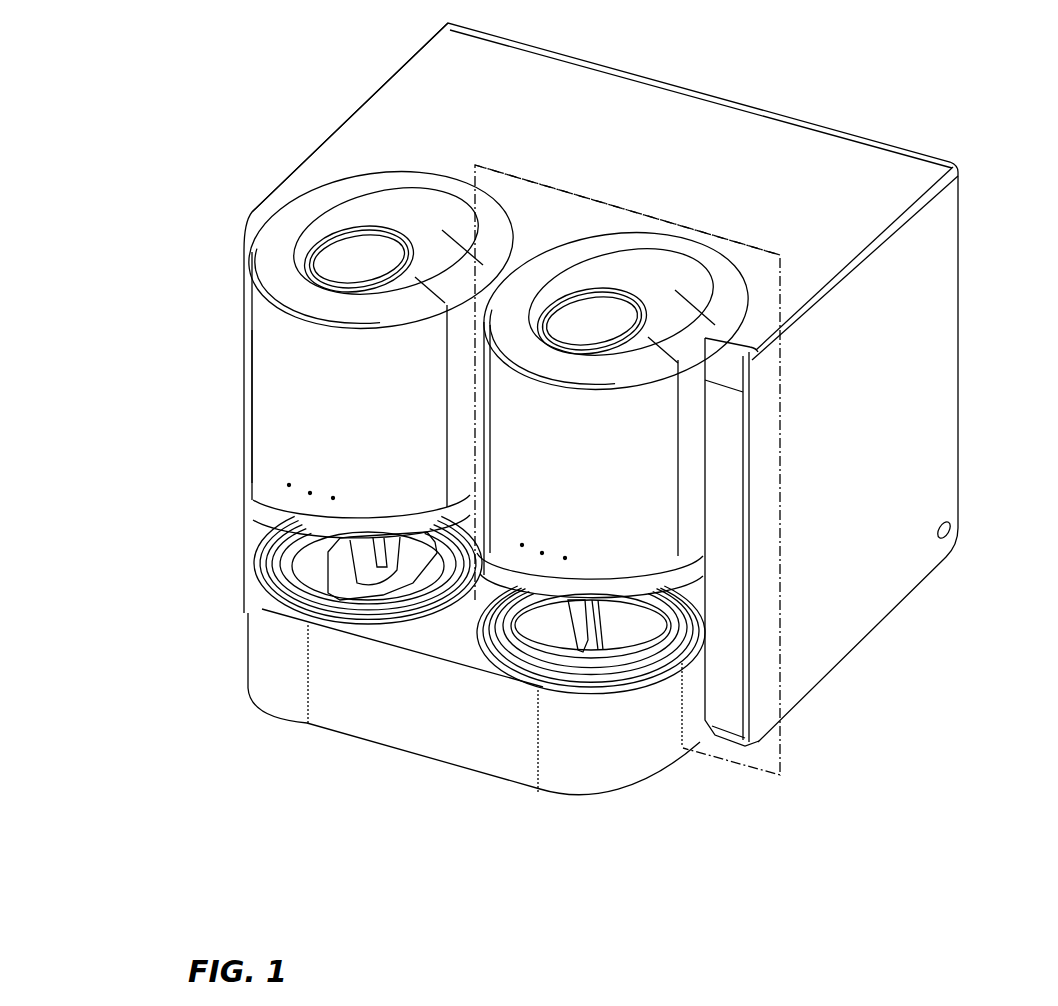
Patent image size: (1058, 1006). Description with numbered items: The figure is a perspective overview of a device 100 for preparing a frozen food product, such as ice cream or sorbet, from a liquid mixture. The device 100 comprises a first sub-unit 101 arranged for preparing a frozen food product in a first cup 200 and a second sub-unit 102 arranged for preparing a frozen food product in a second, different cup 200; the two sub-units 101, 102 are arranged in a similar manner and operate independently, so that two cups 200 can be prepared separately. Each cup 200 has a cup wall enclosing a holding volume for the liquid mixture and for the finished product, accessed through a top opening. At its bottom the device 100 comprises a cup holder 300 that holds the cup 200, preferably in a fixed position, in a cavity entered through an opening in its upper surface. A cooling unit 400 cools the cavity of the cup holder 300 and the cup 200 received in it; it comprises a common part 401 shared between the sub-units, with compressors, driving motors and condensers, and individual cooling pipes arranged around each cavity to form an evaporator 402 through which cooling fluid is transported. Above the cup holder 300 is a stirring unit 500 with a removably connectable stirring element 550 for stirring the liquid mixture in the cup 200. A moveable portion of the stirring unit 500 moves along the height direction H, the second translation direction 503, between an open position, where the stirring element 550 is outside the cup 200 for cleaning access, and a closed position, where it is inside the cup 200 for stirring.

The device 100 is at (105, 281).
The first sub-unit 101 is at (248, 175).
The second sub-unit 102 is at (531, 238).
The cup 200 is at (287, 566).
The cup holder 300 is at (526, 697).
The cooling unit 400 is at (847, 494).
The common part 401 is at (871, 492).
The evaporator 402 is at (650, 754).
The stirring unit 500 is at (598, 484).
The second translation direction 503 is at (211, 406).
The stirring element 550 is at (578, 650).